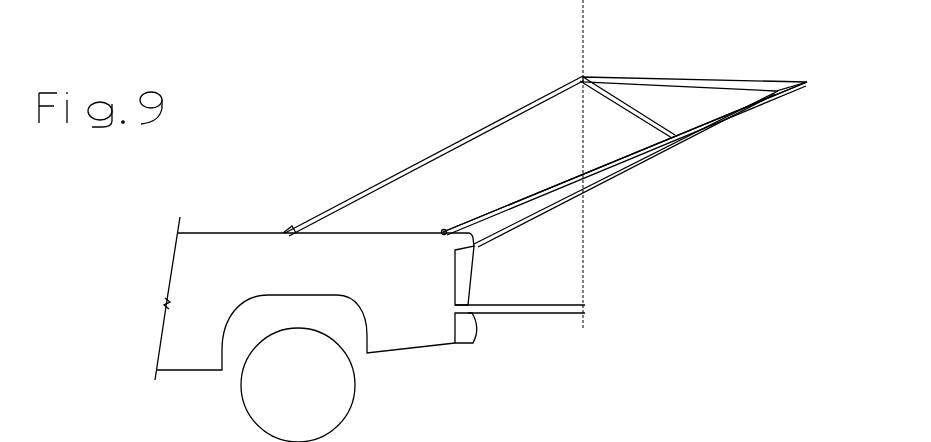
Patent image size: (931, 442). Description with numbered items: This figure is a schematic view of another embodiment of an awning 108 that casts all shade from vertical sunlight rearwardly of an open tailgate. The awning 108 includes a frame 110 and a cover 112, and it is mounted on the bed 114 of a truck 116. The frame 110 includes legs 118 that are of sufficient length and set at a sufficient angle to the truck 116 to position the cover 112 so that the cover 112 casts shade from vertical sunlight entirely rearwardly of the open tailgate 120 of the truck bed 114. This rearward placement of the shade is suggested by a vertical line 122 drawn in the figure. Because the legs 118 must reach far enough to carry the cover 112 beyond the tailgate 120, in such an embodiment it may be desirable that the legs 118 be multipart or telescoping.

The awning 108 is at (643, 123).
The frame 110 is at (583, 124).
The cover 112 is at (695, 58).
The bed 114 is at (316, 292).
The truck 116 is at (433, 156).
The legs 118 is at (612, 157).
The open tailgate 120 is at (520, 287).
The vertical line 122 is at (538, 164).